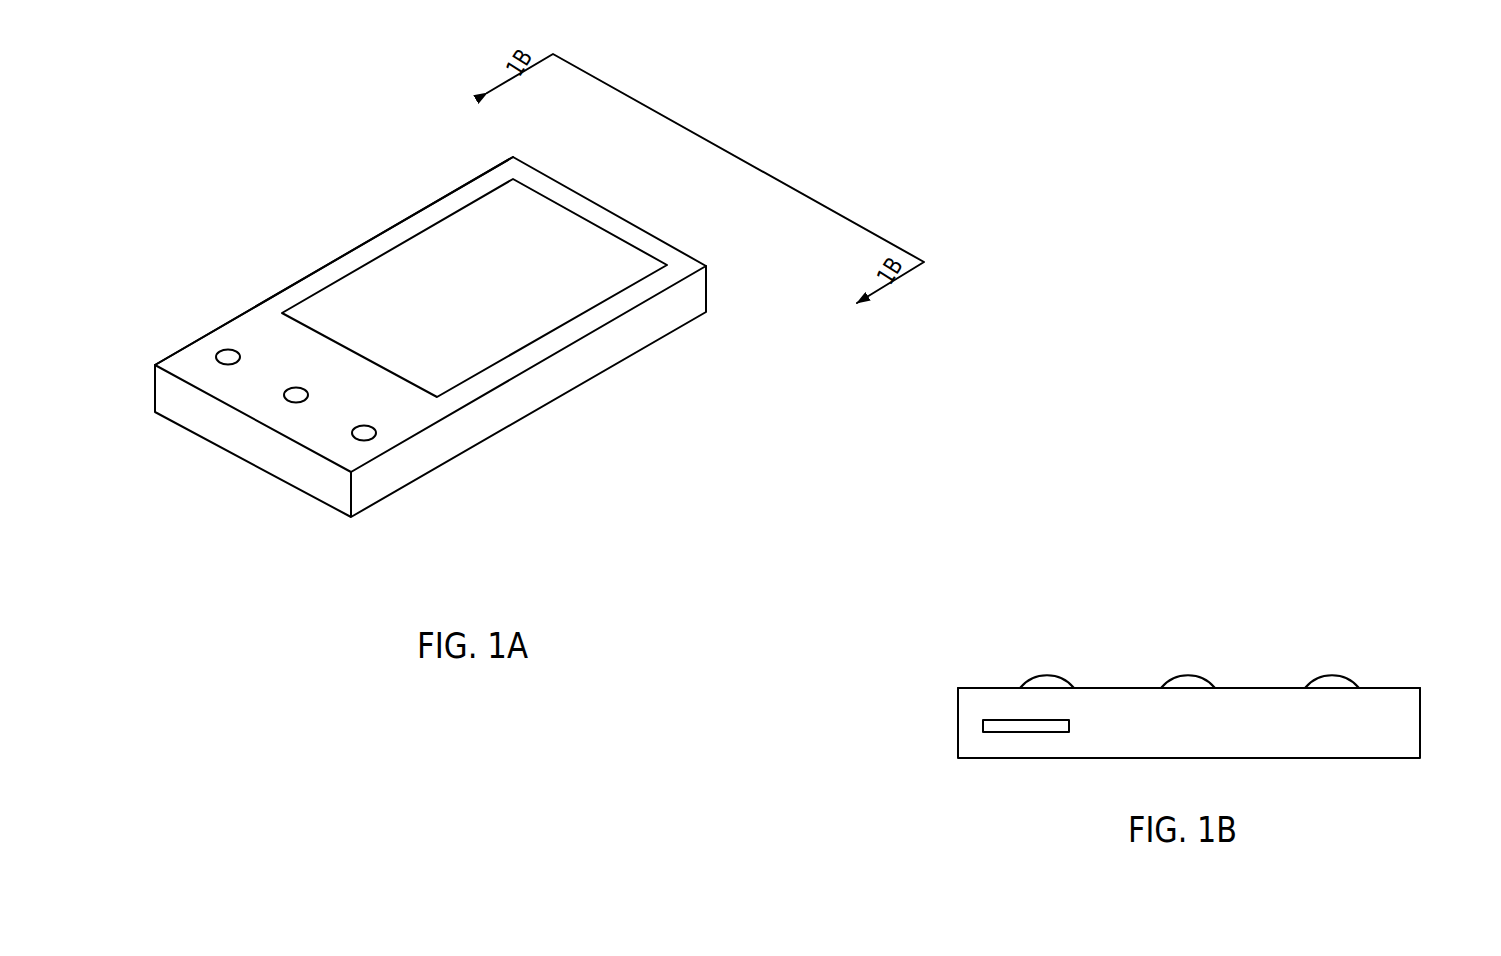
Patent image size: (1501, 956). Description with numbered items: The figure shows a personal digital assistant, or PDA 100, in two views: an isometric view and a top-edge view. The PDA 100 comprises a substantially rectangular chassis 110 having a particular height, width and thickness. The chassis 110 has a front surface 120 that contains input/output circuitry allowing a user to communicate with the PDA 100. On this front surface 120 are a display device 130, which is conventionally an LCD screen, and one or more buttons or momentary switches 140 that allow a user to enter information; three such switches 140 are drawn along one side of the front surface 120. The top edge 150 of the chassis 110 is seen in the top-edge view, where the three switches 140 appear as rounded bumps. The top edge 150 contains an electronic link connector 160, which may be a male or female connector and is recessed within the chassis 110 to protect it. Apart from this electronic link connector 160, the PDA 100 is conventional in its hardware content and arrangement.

In FIG. 1A, the PDA 100 is at (277, 193).
In FIG. 1A, the chassis 110 is at (458, 430).
In FIG. 1B, the chassis 110 is at (1397, 685).
In FIG. 1A, the front surface 120 is at (188, 363).
In FIG. 1A, the display device 130 is at (476, 308).
In FIG. 1A, the buttons or momentary switches 140 is at (222, 364).
In FIG. 1B, the buttons or momentary switches 140 is at (1040, 675).
In FIG. 1A, the top edge 150 is at (587, 198).
In FIG. 1B, the top edge 150 is at (1283, 733).
In FIG. 1B, the electronic link connector 160 is at (1052, 728).